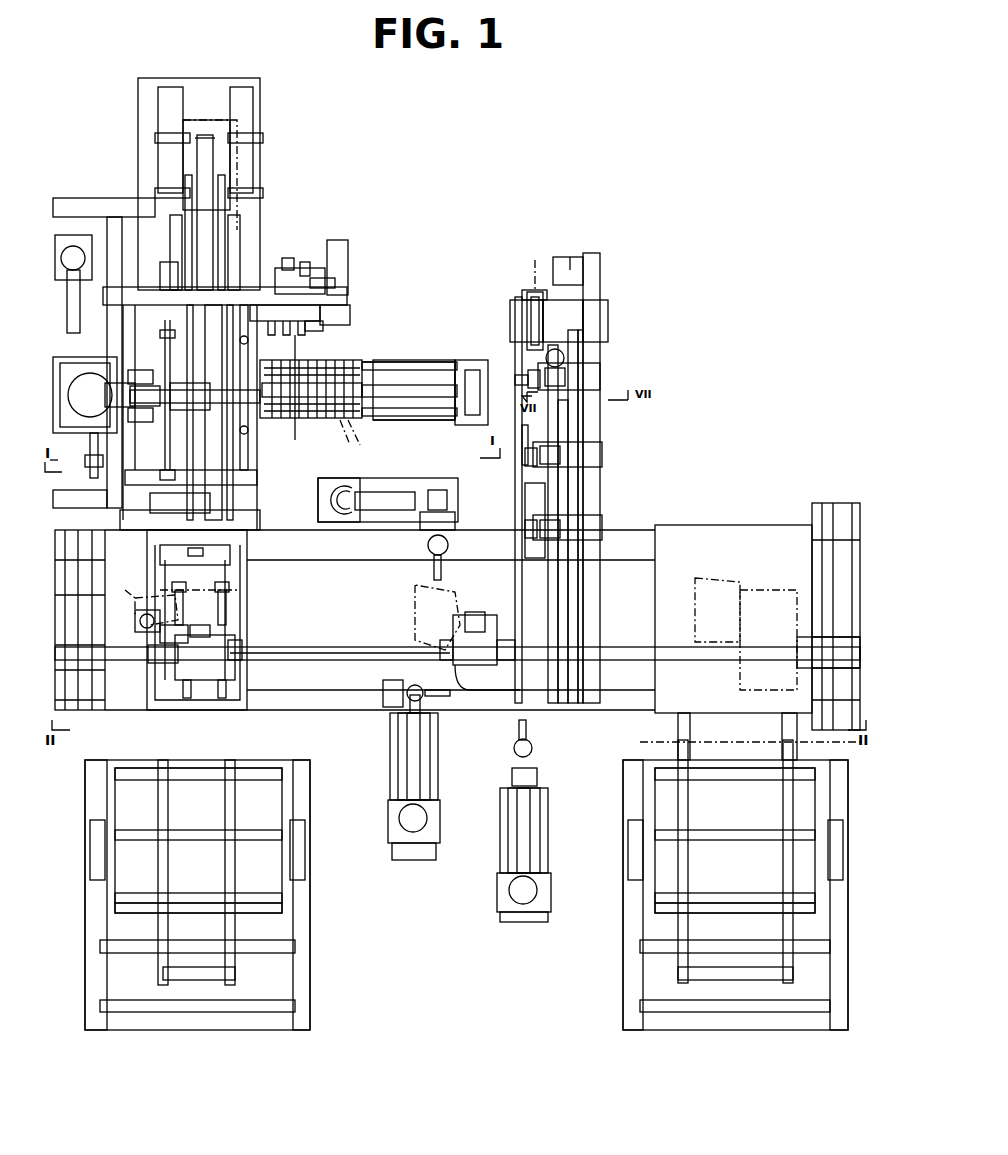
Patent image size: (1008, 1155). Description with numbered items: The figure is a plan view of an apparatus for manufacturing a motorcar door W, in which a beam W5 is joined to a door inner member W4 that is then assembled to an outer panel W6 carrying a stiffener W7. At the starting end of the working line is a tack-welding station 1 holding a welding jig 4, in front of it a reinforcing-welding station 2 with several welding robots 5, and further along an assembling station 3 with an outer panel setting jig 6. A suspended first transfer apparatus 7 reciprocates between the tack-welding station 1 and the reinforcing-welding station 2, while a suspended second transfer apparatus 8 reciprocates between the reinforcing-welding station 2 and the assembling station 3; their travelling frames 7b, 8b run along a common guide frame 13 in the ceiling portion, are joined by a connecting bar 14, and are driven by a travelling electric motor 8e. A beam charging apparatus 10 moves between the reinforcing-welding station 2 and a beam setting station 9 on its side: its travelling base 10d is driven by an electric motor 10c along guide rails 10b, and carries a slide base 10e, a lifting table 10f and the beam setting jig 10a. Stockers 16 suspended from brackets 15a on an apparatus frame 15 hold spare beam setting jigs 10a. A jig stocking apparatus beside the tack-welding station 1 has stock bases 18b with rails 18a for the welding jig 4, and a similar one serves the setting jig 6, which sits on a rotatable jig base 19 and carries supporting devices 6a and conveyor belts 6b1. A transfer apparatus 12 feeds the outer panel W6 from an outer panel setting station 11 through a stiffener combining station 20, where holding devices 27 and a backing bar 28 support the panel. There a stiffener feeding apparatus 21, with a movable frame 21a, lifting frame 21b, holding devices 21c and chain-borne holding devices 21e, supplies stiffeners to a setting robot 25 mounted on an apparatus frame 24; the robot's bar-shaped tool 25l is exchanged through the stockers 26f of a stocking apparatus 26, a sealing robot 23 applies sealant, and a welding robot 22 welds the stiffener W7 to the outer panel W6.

The tack-welding station 1 is at (738, 557).
The reinforcing-welding station 2 is at (470, 583).
The assembling station 3 is at (208, 594).
The welding jig 4 is at (745, 525).
The welding robots 5 is at (390, 502).
The outer panel setting jig 6 is at (232, 580).
The supporting devices 6a is at (178, 610).
The belts 6b1 is at (200, 695).
The first transfer apparatus 7 is at (490, 620).
The travelling frame 7b is at (478, 670).
The second transfer apparatus 8 is at (238, 640).
The travelling frame 8b is at (165, 662).
The travelling electric motor 8e is at (145, 632).
The beam setting station 9 is at (525, 300).
The beam charging apparatus 10 is at (605, 298).
The beam setting jig 10a is at (555, 300).
The guide rails 10b is at (575, 485).
The electric motor 10c is at (565, 360).
The travelling base 10d is at (518, 310).
The slide base 10e is at (608, 322).
The lifting table 10f is at (560, 275).
The outer panel setting station 11 is at (197, 155).
The transfer apparatus 12 is at (205, 255).
The common guide frame 13 is at (345, 648).
The connecting bar 14 is at (385, 648).
The apparatus frame 15 is at (592, 430).
The bracket 15a is at (600, 378).
The stockers 16 is at (527, 378).
The rails 18a is at (225, 810).
The stock bases 18b is at (265, 770).
The jig base 19 is at (245, 572).
The stiffener combining station 20 is at (160, 430).
The stiffener feeding apparatus 21 is at (408, 358).
The movable frame 21a is at (475, 358).
The lifting frame 21b is at (455, 358).
The holding devices 21c is at (402, 360).
The holding devices 21e is at (383, 360).
The welding robot 22 is at (82, 232).
The sealing robot 23 is at (115, 375).
The apparatus frame 24 is at (340, 308).
The setting robot 25 is at (312, 262).
The bar-shaped tool 25l is at (292, 425).
The stocking apparatus 26 is at (322, 330).
The stockers 26f is at (285, 333).
The holding devices 27 is at (248, 320).
The backing bar 28 is at (165, 352).
The motorcar door W is at (143, 594).
The door inner member W4 is at (415, 595).
The beam W5 is at (531, 288).
The outer panel W6 is at (240, 155).
The stiffener W7 is at (356, 447).